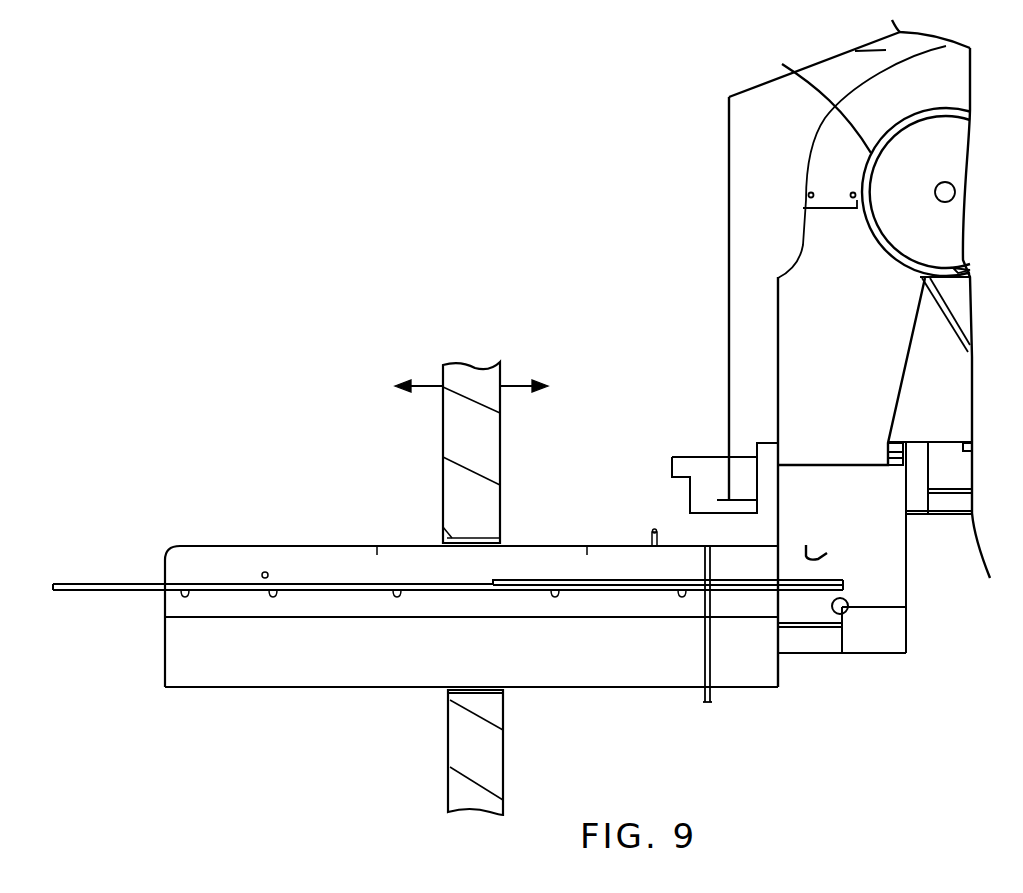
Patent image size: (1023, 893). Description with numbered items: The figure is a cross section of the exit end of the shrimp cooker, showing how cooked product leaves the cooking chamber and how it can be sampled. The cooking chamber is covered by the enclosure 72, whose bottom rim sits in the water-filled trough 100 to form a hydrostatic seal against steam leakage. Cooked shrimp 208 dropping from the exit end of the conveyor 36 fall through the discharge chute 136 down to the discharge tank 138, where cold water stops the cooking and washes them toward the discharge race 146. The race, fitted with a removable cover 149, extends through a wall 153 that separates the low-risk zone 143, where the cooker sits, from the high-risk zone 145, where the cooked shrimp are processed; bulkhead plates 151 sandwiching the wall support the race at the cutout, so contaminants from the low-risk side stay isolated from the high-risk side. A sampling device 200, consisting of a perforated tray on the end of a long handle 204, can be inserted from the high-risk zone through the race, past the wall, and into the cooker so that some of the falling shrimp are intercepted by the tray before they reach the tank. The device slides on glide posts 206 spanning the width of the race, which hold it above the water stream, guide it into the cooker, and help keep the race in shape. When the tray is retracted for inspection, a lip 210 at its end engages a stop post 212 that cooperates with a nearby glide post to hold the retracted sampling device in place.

The conveyor 36 is at (782, 64).
The enclosure 72 is at (728, 138).
The discharge chute 136 is at (785, 290).
The trough 100 is at (705, 462).
The discharge tank 138 is at (812, 618).
The lip 210 is at (848, 600).
The cooked shrimp 208 is at (803, 552).
The cover 149 is at (598, 546).
The discharge race 146 is at (583, 685).
The handle 204 is at (122, 583).
The stop post 212 is at (267, 572).
The glide posts 206 is at (274, 597).
The sampling device 200 is at (728, 583).
The bulkhead plates 151 is at (443, 507).
The wall 153 is at (497, 458).
The high-risk zone 145 is at (430, 385).
The low-risk zone 143 is at (513, 383).